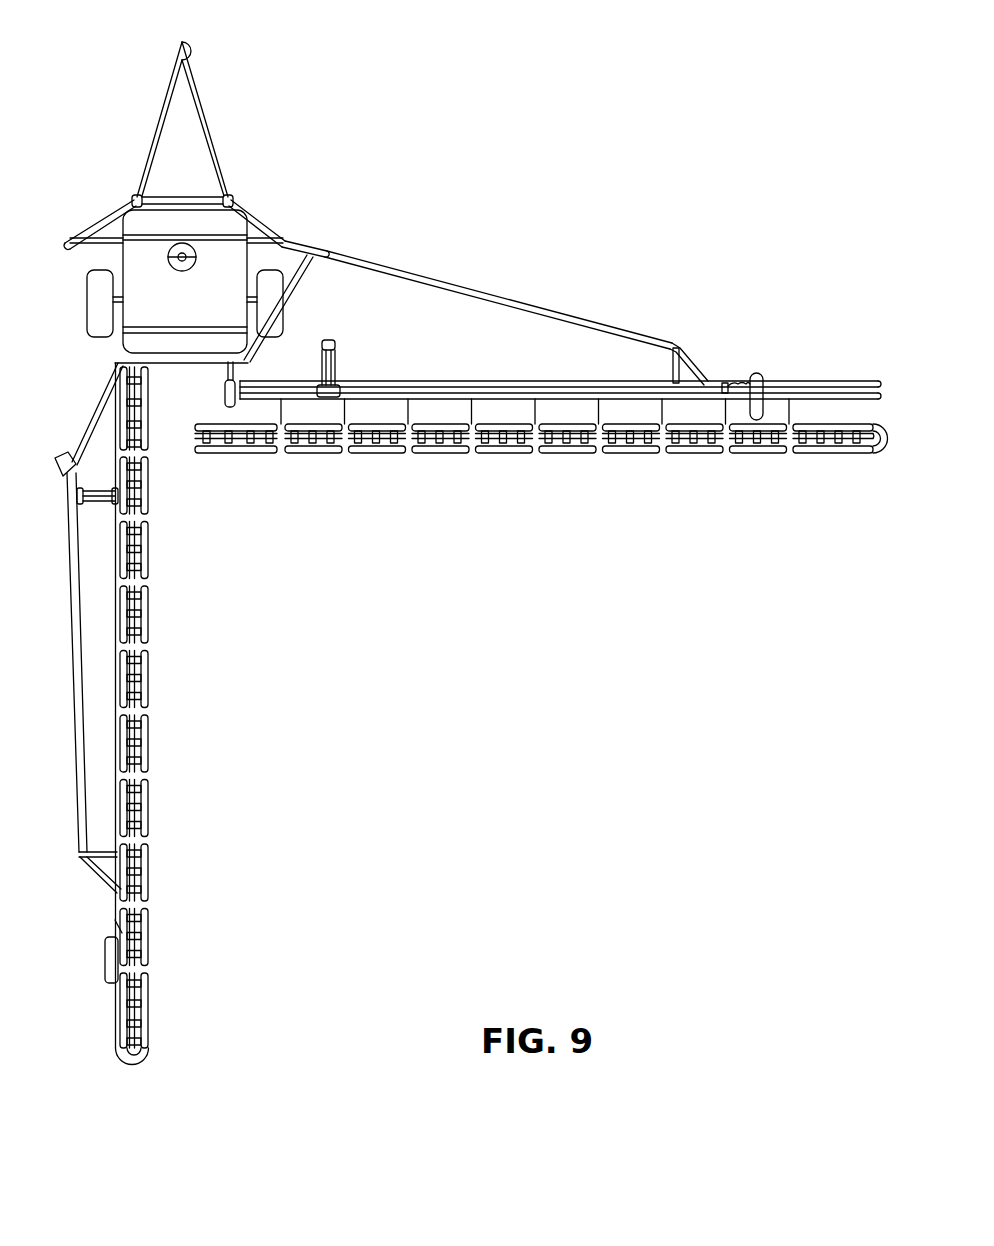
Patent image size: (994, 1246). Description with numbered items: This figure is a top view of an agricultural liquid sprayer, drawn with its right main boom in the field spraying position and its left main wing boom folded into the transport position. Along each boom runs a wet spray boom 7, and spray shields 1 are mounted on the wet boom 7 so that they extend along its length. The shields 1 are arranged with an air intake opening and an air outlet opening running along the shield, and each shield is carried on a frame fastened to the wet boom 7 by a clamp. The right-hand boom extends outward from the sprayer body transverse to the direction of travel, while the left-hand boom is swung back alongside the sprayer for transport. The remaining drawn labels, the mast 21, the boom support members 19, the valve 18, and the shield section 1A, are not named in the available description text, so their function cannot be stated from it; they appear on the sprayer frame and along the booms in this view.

The mast 21 is at (226, 166).
The boom support beam 19 is at (462, 380).
The valve 18 is at (777, 392).
The spray shield 1 is at (817, 430).
The spray bar section 1A is at (800, 455).
The wet spray boom 7 is at (496, 706).